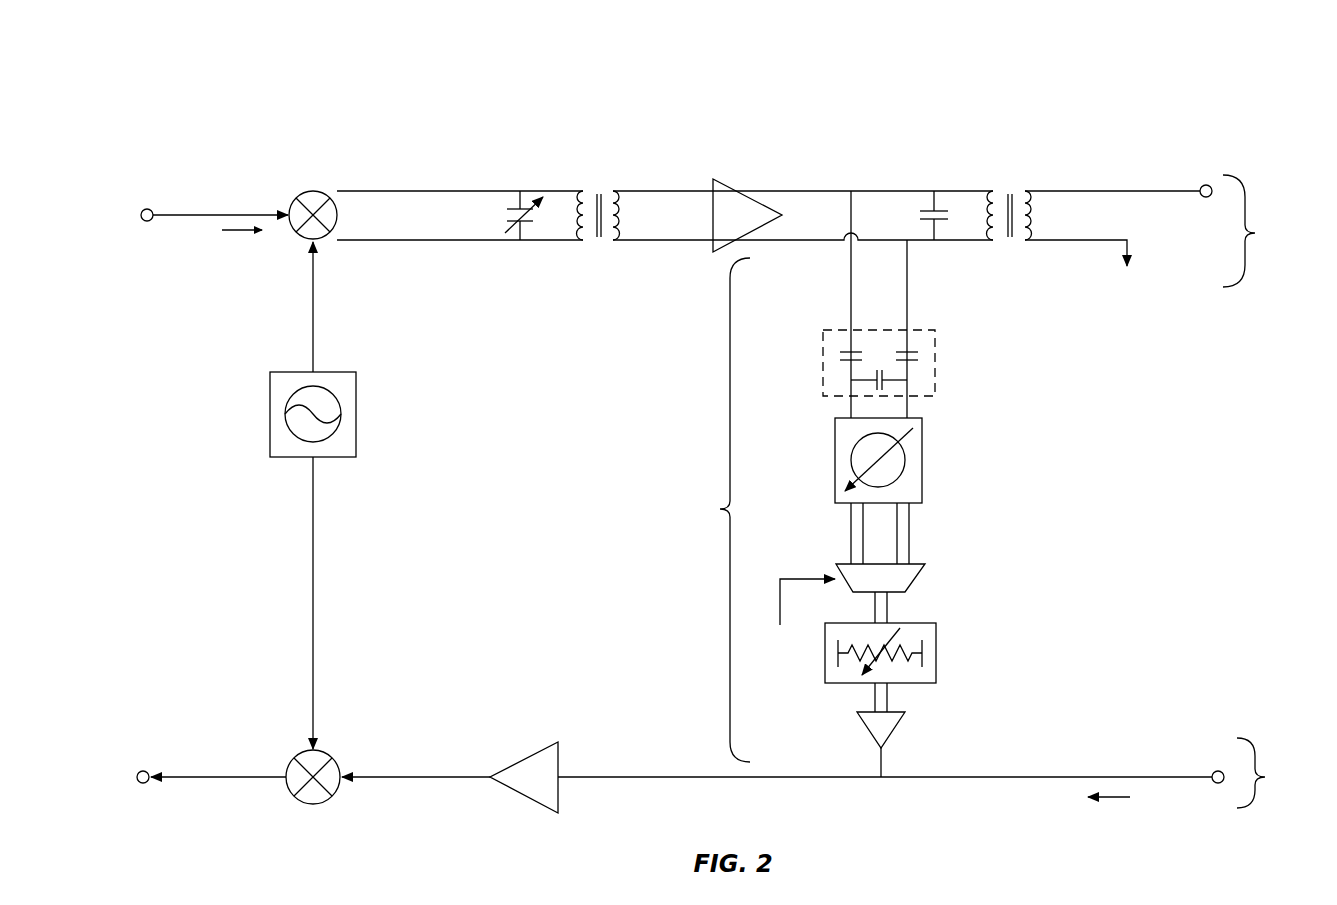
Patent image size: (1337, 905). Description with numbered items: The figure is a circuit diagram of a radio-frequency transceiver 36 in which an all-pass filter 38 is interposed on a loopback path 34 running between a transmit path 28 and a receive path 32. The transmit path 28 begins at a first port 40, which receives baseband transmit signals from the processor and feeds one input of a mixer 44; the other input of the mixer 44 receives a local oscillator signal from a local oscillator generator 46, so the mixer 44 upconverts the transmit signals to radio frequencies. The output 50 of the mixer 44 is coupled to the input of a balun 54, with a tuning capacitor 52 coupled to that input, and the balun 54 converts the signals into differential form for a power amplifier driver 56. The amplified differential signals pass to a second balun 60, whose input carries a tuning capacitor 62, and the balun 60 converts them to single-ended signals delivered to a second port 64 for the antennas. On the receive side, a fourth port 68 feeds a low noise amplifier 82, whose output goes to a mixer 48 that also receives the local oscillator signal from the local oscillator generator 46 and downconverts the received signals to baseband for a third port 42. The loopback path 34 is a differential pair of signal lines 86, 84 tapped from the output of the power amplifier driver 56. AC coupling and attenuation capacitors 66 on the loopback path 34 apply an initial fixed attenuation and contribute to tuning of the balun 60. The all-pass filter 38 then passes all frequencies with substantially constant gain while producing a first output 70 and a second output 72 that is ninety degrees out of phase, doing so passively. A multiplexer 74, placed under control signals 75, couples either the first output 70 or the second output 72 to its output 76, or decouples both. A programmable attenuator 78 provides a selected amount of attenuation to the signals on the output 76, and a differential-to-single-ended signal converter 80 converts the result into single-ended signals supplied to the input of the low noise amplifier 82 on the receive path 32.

The transmit path 28 is at (1260, 231).
The receive path 32 is at (1272, 773).
The loopback path 34 is at (714, 510).
The radio-frequency transceiver 36 is at (1016, 75).
The all-pass filter 38 is at (924, 460).
The first port 40 is at (147, 208).
The third port 42 is at (146, 768).
The mixer 44 is at (313, 189).
The local oscillator generator 46 is at (270, 418).
The mixer 48 is at (338, 758).
The output of mixer 50 is at (437, 193).
The tuning capacitor 52 is at (519, 262).
The balun 54 is at (607, 176).
The power amplifier driver 56 is at (737, 196).
The balun 60 is at (1022, 170).
The tuning capacitor 62 is at (940, 182).
The second port 64 is at (1203, 199).
The AC coupling and attenuation capacitors 66 is at (938, 368).
The fourth port 68 is at (1221, 766).
The first output 70 is at (844, 548).
The second output 72 is at (916, 547).
The multiplexer 74 is at (906, 574).
The control signals 75 is at (782, 598).
The output of multiplexer 76 is at (902, 602).
The programmable attenuator 78 is at (938, 640).
The differential-to-single-ended signal converter 80 is at (922, 741).
The low noise amplifier 82 is at (541, 758).
The signal line 84 is at (909, 282).
The signal line 86 is at (849, 286).